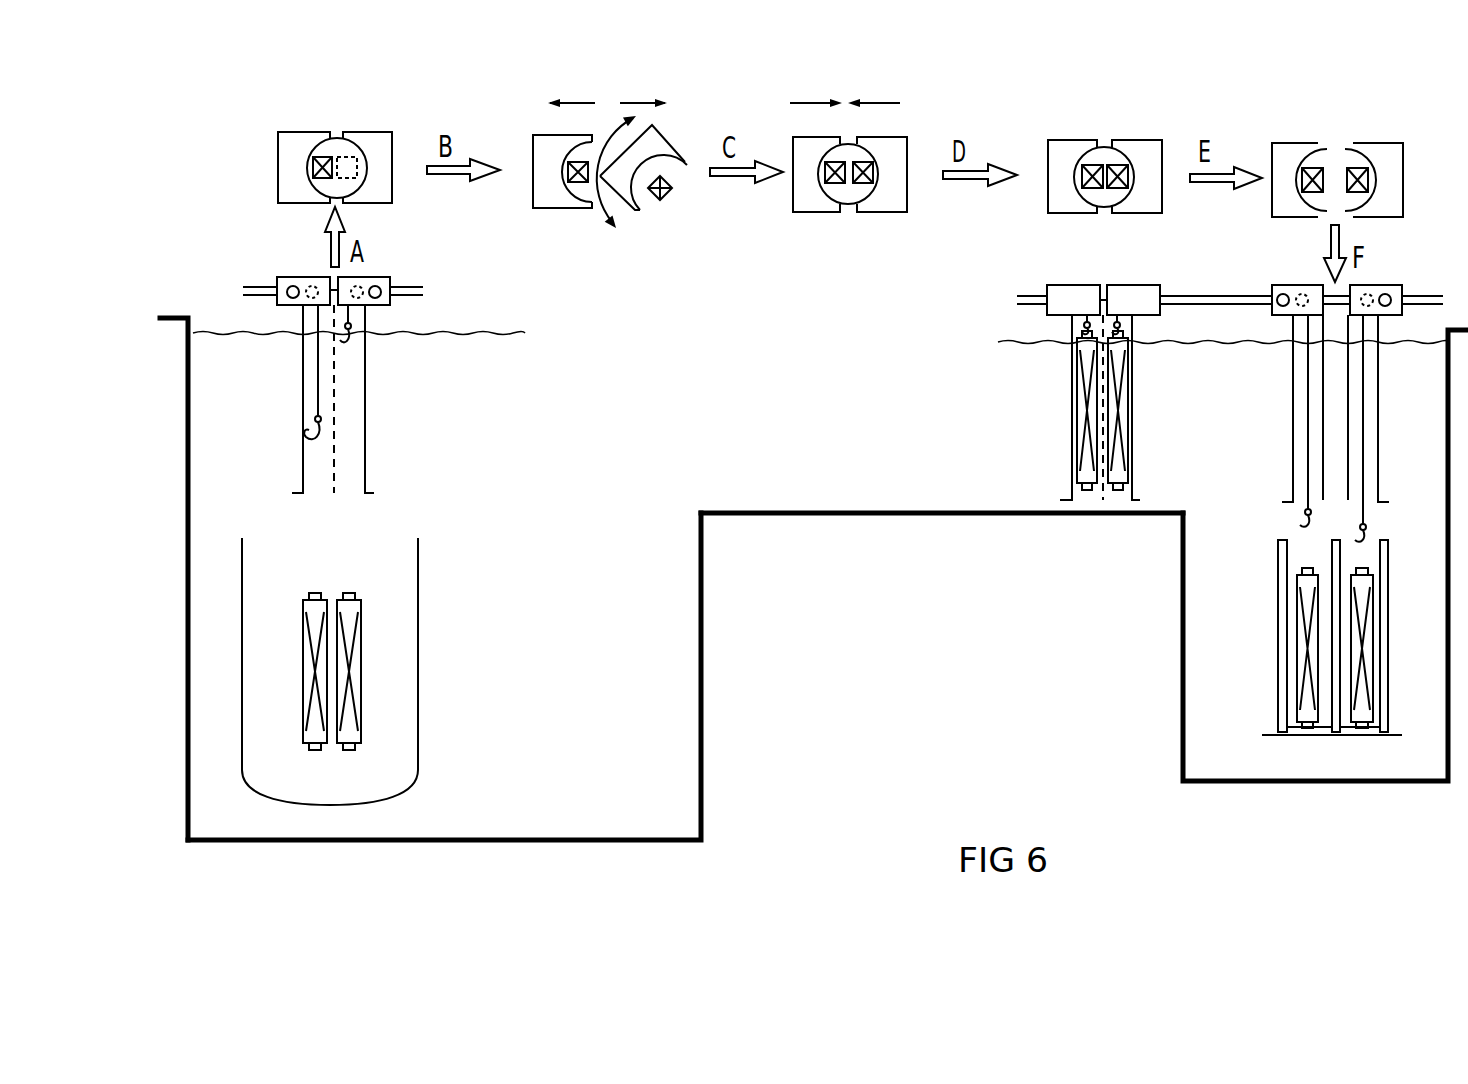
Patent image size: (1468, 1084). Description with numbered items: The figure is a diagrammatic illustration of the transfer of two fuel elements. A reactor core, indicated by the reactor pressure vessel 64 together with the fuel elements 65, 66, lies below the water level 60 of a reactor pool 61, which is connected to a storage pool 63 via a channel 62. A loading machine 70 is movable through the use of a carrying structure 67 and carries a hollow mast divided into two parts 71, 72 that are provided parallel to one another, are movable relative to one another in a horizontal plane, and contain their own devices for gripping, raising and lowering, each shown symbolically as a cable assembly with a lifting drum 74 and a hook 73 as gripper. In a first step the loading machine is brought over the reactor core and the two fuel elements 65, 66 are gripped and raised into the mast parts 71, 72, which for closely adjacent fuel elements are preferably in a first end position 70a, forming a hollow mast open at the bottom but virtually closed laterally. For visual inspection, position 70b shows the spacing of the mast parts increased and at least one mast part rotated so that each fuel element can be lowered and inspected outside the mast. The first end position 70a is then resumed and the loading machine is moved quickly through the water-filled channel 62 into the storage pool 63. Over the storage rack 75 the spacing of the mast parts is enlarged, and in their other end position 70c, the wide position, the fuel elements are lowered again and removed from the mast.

The water level 60 is at (215, 338).
The reactor pool 61 is at (678, 715).
The channel 62 is at (915, 490).
The storage pool 63 is at (1205, 733).
The reactor pressure vessel 64 is at (418, 698).
The fuel element 65 is at (322, 158).
The fuel element 66 is at (348, 750).
The carrying structure 67 is at (258, 288).
The loading machine 70 is at (380, 278).
The first end position 70a is at (268, 162).
The inspection position 70b is at (593, 208).
The other end position 70c is at (1338, 150).
The mast part 71 is at (295, 132).
The mast part 72 is at (370, 132).
The hook 73 is at (305, 432).
The lifting drum 74 is at (291, 287).
The storage rack 75 is at (1303, 735).